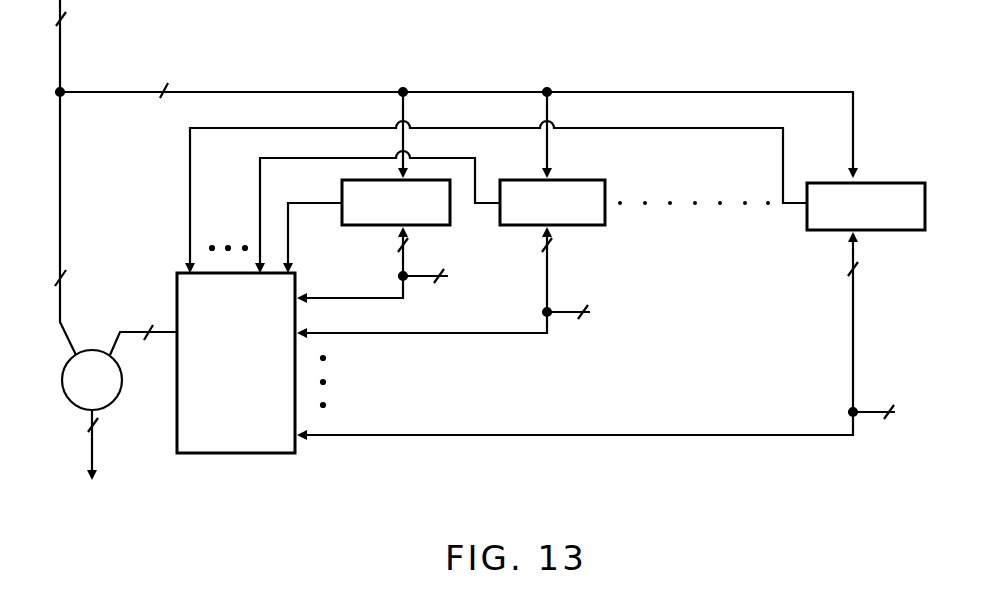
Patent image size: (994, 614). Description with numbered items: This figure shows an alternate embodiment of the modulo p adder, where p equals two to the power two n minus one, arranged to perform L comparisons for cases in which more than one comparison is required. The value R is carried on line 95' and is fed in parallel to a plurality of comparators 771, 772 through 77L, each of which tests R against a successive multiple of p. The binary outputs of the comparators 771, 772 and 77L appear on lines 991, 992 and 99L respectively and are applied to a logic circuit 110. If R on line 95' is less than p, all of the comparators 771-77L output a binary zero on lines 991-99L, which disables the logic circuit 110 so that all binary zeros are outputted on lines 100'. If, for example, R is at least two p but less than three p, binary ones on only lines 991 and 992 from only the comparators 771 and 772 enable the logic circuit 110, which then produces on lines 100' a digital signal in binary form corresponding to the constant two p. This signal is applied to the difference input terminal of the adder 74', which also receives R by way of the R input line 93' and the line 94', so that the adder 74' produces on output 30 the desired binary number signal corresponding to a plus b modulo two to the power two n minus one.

The R input line 93' is at (79, 46).
The line 95' is at (454, 111).
The R line to subtractor 94' is at (85, 223).
The adder 74' is at (88, 361).
The lines 100' is at (143, 347).
The output line 30 is at (90, 470).
The logic circuit 110 is at (248, 455).
The line 991 is at (330, 200).
The line 992 is at (478, 188).
The line 99L is at (784, 172).
The comparator 771 is at (380, 230).
The comparator 772 is at (602, 228).
The comparator 77L is at (825, 233).